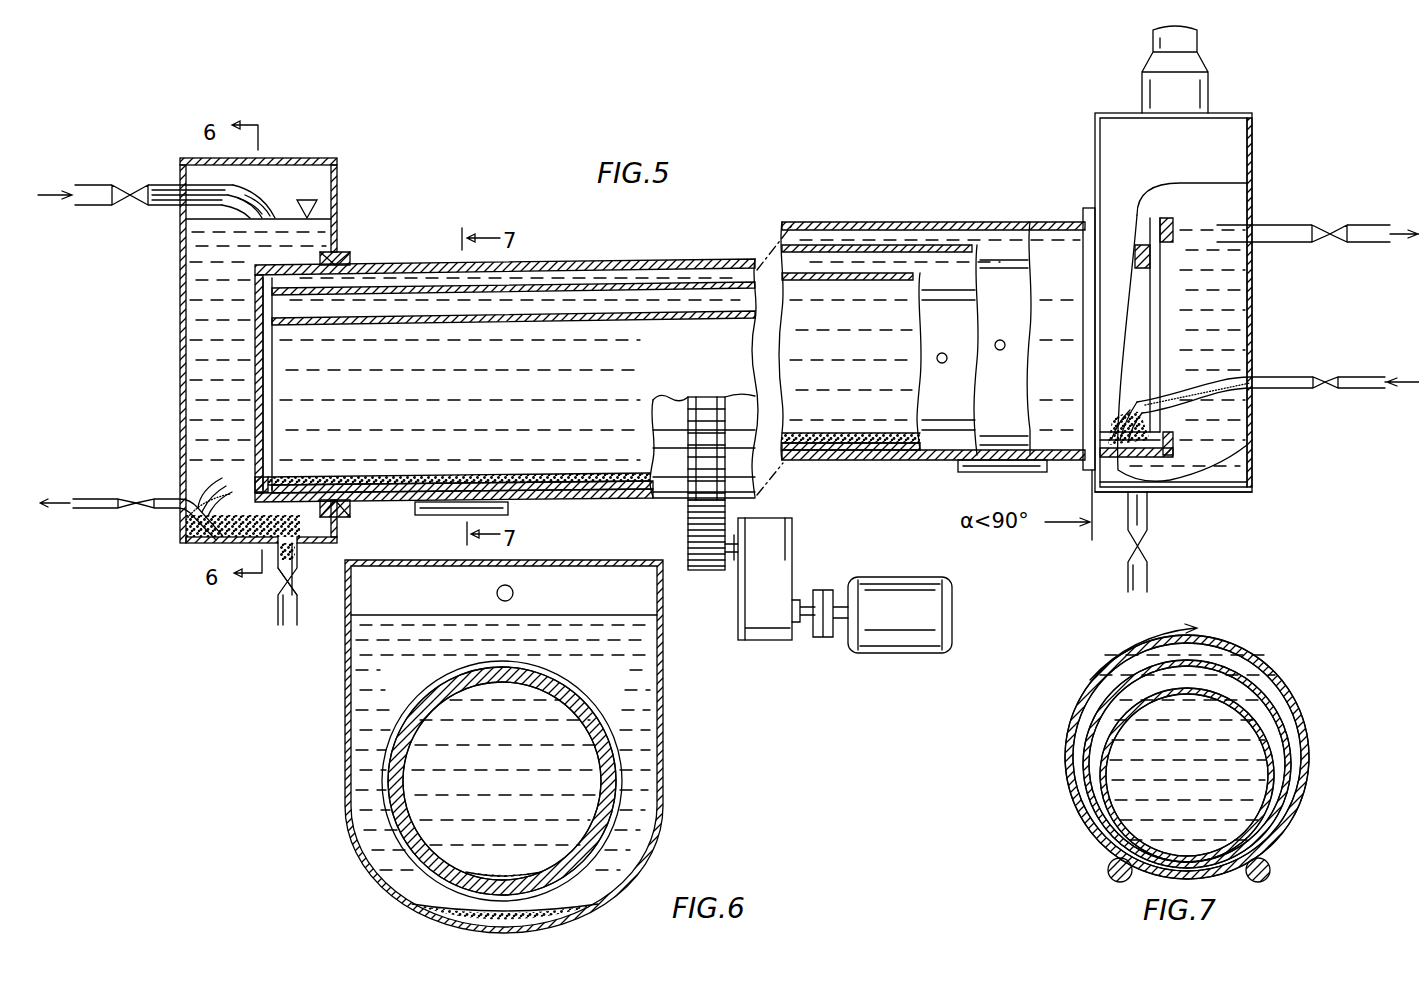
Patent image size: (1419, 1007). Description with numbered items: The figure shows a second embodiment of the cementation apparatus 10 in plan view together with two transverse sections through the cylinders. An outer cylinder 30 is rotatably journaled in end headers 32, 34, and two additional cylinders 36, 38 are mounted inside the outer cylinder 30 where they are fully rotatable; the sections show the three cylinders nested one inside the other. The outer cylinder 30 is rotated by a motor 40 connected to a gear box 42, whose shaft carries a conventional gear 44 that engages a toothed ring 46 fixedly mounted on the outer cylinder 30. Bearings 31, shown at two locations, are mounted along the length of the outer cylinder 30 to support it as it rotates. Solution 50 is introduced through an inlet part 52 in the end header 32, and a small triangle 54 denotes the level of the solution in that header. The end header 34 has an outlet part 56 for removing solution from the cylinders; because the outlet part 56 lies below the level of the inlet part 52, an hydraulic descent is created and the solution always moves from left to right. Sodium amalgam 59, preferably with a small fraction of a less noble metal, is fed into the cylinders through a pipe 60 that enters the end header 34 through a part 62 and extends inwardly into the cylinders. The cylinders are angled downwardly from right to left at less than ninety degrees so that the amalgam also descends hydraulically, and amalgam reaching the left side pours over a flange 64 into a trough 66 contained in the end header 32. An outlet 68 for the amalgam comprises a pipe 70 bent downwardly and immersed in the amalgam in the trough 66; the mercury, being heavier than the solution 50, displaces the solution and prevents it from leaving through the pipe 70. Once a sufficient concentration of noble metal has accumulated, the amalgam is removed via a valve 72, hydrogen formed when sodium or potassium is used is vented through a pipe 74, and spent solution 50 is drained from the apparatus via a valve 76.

In FIG. 6, the apparatus 10 is at (590, 905).
In FIG. 5, the outer cylinder 30 is at (540, 264).
In FIG. 6, the outer cylinder 30 is at (617, 752).
In FIG. 7, the outer cylinder 30 is at (1255, 663).
In FIG. 5, the bearings 31 is at (418, 514).
In FIG. 7, the bearings 31 is at (1272, 870).
In FIG. 5, the end header 32 is at (180, 378).
In FIG. 5, the end header 34 is at (1248, 158).
In FIG. 5, the cylinder 36 is at (592, 286).
In FIG. 7, the cylinder 36 is at (1278, 718).
In FIG. 5, the cylinder 38 is at (634, 315).
In FIG. 7, the cylinder 38 is at (1275, 772).
In FIG. 5, the motor 40 is at (910, 578).
In FIG. 5, the gear box 42 is at (790, 550).
In FIG. 5, the gear 44 is at (710, 574).
In FIG. 5, the toothed ring 46 is at (688, 505).
In FIG. 5, the solution 50 is at (200, 262).
In FIG. 7, the solution 50 is at (1110, 690).
In FIG. 5, the inlet part 52 is at (182, 188).
In FIG. 6, the inlet part 52 is at (516, 593).
In FIG. 5, the level of the solution 54 is at (307, 200).
In FIG. 5, the outlet part 56 is at (1270, 225).
In FIG. 5, the sodium amalgam 59 is at (330, 478).
In FIG. 6, the sodium amalgam 59 is at (512, 875).
In FIG. 5, the pipe 60 is at (1280, 377).
In FIG. 5, the part 62 is at (1254, 393).
In FIG. 5, the flange 64 is at (256, 470).
In FIG. 5, the trough 66 is at (182, 531).
In FIG. 5, the outlet 68 is at (163, 497).
In FIG. 5, the pipe 70 is at (193, 497).
In FIG. 5, the valve 72 is at (290, 598).
In FIG. 5, the pipe 74 is at (1210, 66).
In FIG. 5, the valve 76 is at (1148, 515).